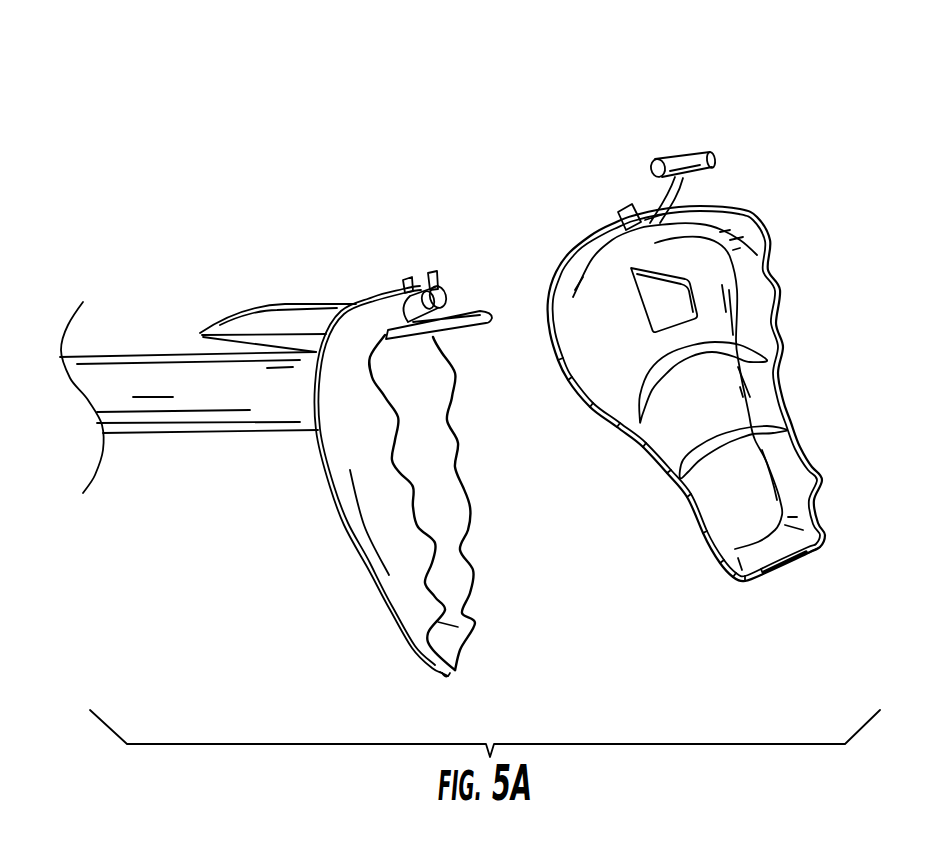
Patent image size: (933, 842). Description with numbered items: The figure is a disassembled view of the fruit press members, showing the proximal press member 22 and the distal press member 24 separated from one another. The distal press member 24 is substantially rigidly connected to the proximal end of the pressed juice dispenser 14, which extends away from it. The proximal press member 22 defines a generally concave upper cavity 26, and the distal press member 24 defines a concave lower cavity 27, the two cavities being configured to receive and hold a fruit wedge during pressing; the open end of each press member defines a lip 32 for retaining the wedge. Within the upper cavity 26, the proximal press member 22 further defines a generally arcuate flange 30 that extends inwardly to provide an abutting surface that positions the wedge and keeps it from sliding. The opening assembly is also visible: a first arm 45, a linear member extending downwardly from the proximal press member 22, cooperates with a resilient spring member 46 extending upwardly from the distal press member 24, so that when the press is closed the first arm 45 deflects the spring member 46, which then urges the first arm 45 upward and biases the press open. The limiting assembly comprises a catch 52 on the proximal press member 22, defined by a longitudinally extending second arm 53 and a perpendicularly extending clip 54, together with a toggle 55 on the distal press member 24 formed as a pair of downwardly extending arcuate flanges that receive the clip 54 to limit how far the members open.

The pressed juice dispenser 14 is at (140, 372).
The proximal press member 22 is at (755, 220).
The distal press member 24 is at (377, 303).
The upper cavity 26 is at (727, 387).
The lower cavity 27 is at (413, 440).
The flange 30 is at (740, 347).
The lip 32 is at (447, 678).
The first arm 45 is at (680, 300).
The spring member 46 is at (465, 313).
The catch 52 is at (685, 124).
The second arm 53 is at (687, 187).
The clip 54 is at (693, 138).
The toggle 55 is at (438, 298).